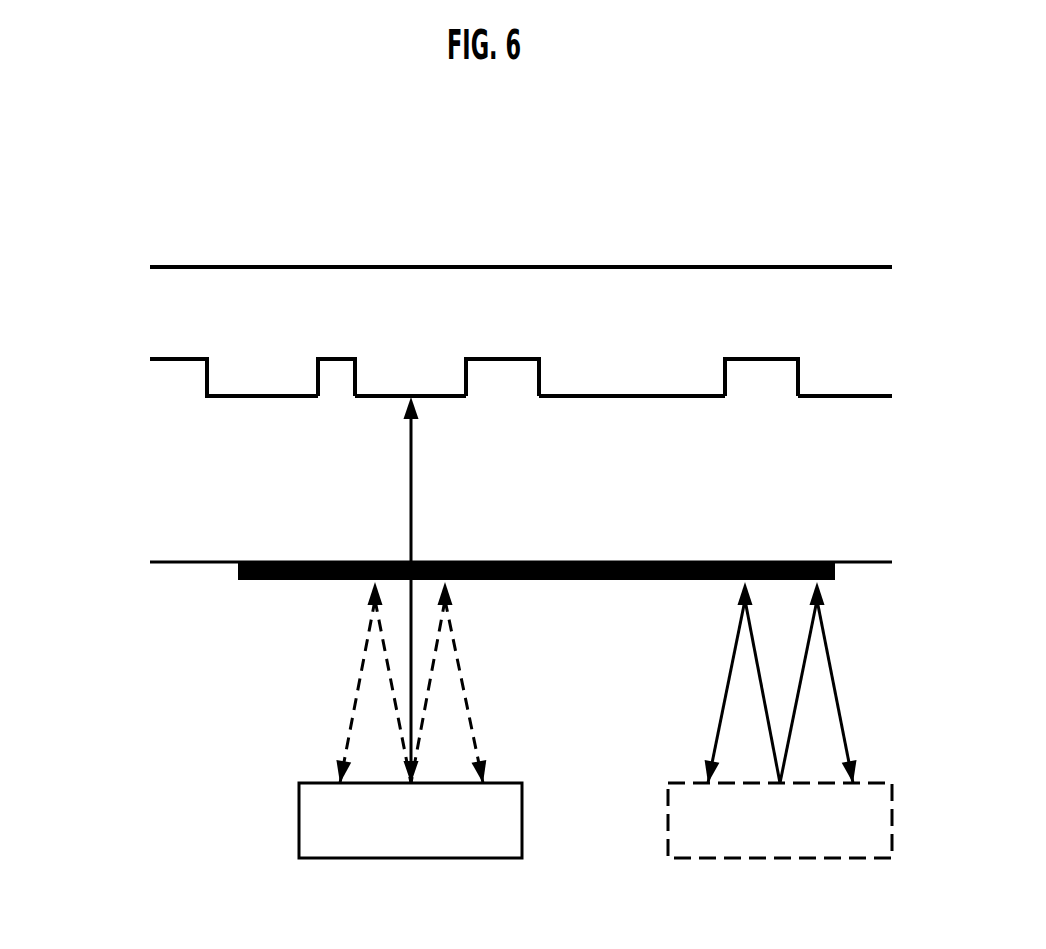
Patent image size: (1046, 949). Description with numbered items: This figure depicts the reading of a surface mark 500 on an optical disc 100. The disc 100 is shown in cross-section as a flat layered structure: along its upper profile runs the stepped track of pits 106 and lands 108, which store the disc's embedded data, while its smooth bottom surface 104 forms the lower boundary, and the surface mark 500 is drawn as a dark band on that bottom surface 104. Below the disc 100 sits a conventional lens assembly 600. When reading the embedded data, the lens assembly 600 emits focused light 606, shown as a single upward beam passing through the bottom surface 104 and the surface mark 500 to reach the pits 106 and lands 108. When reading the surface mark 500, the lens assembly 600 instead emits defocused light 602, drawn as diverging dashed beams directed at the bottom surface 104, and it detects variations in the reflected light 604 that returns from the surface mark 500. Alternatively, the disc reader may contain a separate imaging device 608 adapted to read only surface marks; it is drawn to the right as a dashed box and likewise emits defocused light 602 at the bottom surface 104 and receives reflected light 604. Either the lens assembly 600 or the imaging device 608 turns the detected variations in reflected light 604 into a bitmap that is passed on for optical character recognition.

The optical disc 100 is at (468, 414).
The bottom surface 104 is at (850, 560).
The pits 106 is at (258, 400).
The lands 108 is at (338, 362).
The surface mark 500 is at (268, 582).
The lens assembly 600 is at (418, 850).
The defocused light 602 is at (400, 735).
The reflected light 604 is at (357, 672).
The focused light 606 is at (413, 522).
The imaging device 608 is at (775, 850).